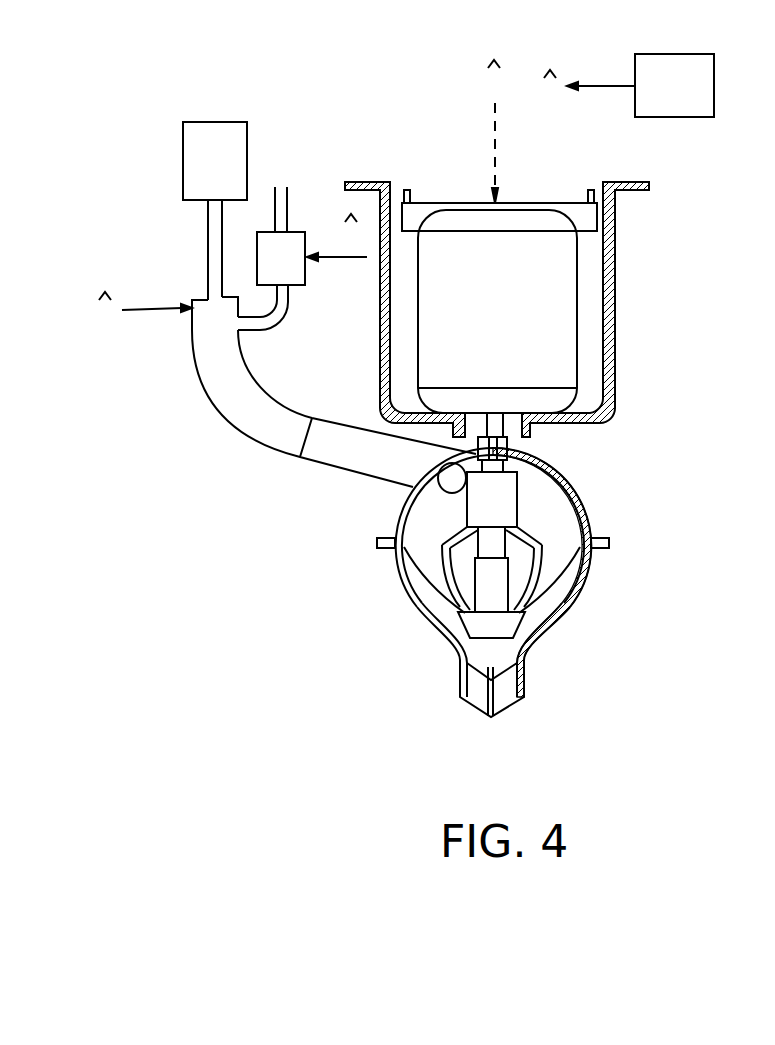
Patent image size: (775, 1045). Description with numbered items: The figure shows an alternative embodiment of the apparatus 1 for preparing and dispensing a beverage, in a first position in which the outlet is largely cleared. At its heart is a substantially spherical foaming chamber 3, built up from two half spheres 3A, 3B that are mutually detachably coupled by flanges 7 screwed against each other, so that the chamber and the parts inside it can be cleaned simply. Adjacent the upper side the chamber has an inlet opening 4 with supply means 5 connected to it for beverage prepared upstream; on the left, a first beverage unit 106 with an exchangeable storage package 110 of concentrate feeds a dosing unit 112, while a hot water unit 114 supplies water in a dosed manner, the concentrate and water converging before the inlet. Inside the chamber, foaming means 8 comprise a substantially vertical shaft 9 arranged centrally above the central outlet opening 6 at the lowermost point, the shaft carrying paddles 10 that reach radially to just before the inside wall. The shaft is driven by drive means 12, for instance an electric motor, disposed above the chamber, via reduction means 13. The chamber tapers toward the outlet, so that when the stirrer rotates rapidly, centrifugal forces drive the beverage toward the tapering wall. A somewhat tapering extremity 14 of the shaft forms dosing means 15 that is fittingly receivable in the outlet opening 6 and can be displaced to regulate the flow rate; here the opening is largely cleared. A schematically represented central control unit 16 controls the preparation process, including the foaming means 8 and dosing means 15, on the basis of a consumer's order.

The apparatus 1 is at (692, 705).
The foaming chamber 3 is at (612, 477).
The half sphere 3A is at (585, 510).
The half sphere 3B is at (573, 600).
The inlet opening 4 is at (467, 477).
The supply means 5 is at (330, 443).
The outlet opening 6 is at (503, 693).
The flanges 7 is at (610, 538).
The foaming means 8 is at (418, 594).
The shaft 9 is at (487, 495).
The paddles 10 is at (552, 552).
The drive means 12 is at (550, 273).
The reduction means 13 is at (507, 449).
The tapering extremity 14 is at (497, 620).
The dosing means 15 is at (445, 649).
The central control unit 16 is at (664, 95).
The first beverage unit 106 is at (187, 220).
The exchangeable storage package 110 is at (208, 173).
The dosing unit 112 is at (212, 308).
The hot water unit 114 is at (285, 267).